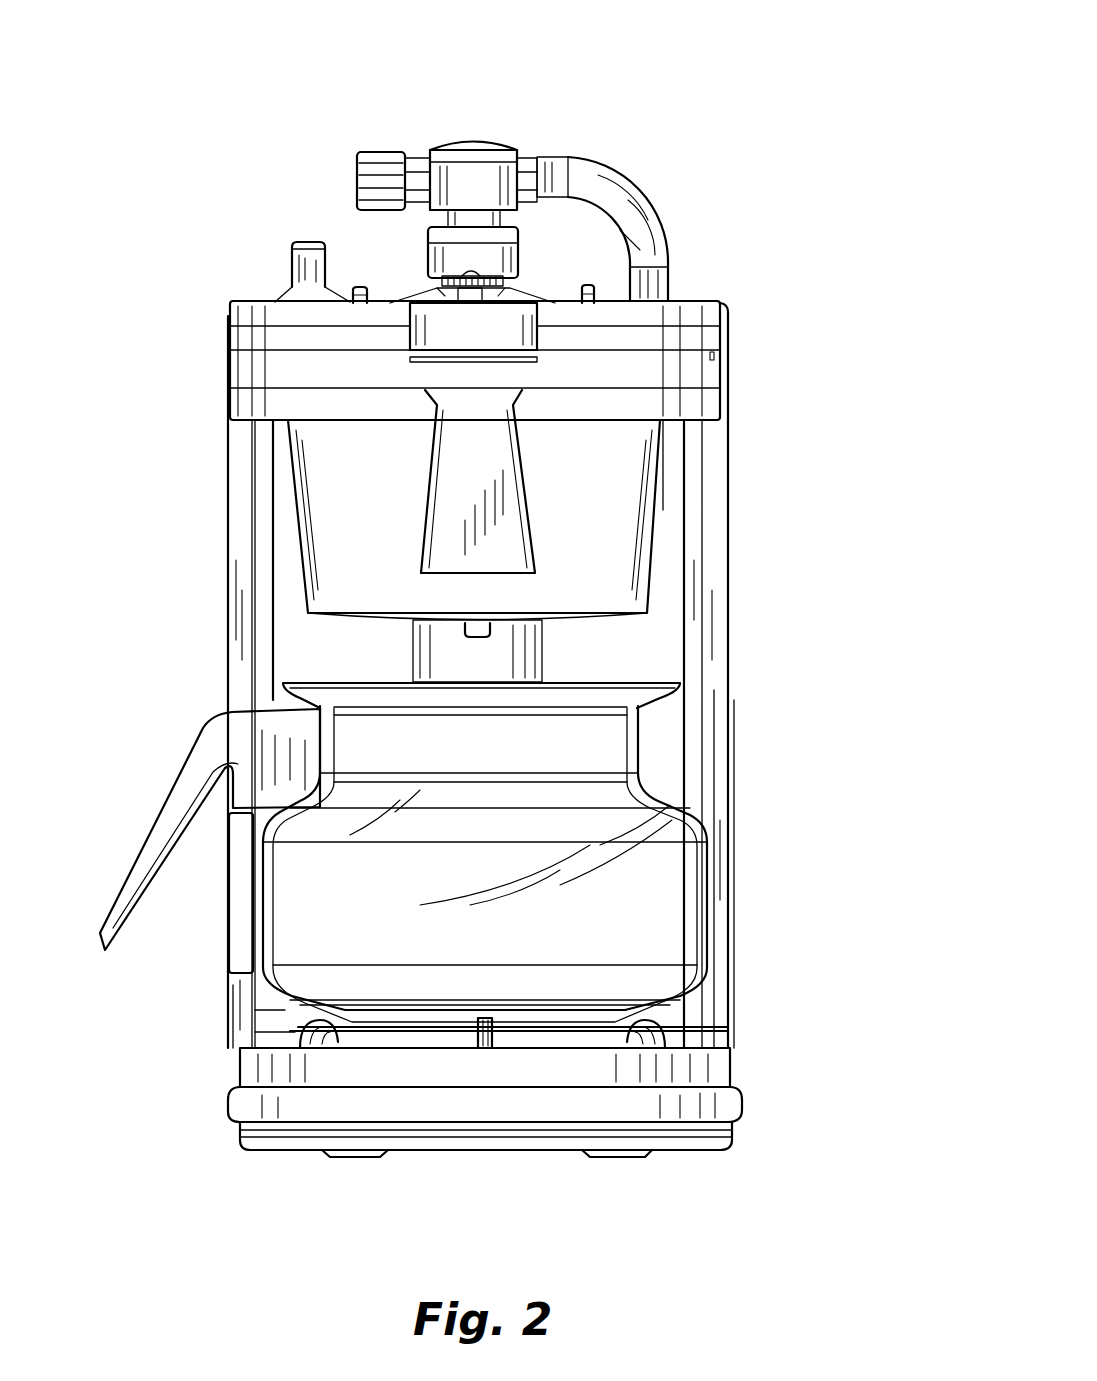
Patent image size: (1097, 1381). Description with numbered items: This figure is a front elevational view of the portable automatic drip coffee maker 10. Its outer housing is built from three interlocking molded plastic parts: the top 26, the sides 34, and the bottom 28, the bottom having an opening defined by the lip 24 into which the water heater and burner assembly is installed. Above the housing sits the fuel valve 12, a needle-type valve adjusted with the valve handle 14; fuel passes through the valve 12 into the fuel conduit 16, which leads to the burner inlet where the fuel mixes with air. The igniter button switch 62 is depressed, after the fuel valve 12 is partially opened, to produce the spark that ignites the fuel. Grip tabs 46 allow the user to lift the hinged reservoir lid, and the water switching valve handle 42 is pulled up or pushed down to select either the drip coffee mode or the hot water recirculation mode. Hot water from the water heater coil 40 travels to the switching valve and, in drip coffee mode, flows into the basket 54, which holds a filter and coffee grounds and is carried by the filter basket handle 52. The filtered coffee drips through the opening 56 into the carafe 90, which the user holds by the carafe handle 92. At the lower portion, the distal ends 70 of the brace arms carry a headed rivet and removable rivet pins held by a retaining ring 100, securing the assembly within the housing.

The portable automatic drip coffee maker 10 is at (875, 88).
The fuel valve 12 is at (473, 148).
The valve handle 14 is at (375, 150).
The fuel conduit 16 is at (603, 160).
The lip 24 is at (330, 1060).
The top 26 is at (228, 318).
The bottom 28 is at (240, 1118).
The sides 34 is at (228, 580).
The water heater coil 40 is at (548, 1036).
The water switching valve handle 42 is at (430, 277).
The grip tabs 46 is at (355, 293).
The filter basket handle 52 is at (484, 459).
The basket 54 is at (378, 564).
The opening 56 is at (480, 638).
The igniter button switch 62 is at (292, 255).
The distal ends 70 is at (300, 1047).
The carafe 90 is at (470, 893).
The carafe handle 92 is at (150, 830).
The retaining ring 100 is at (250, 1013).